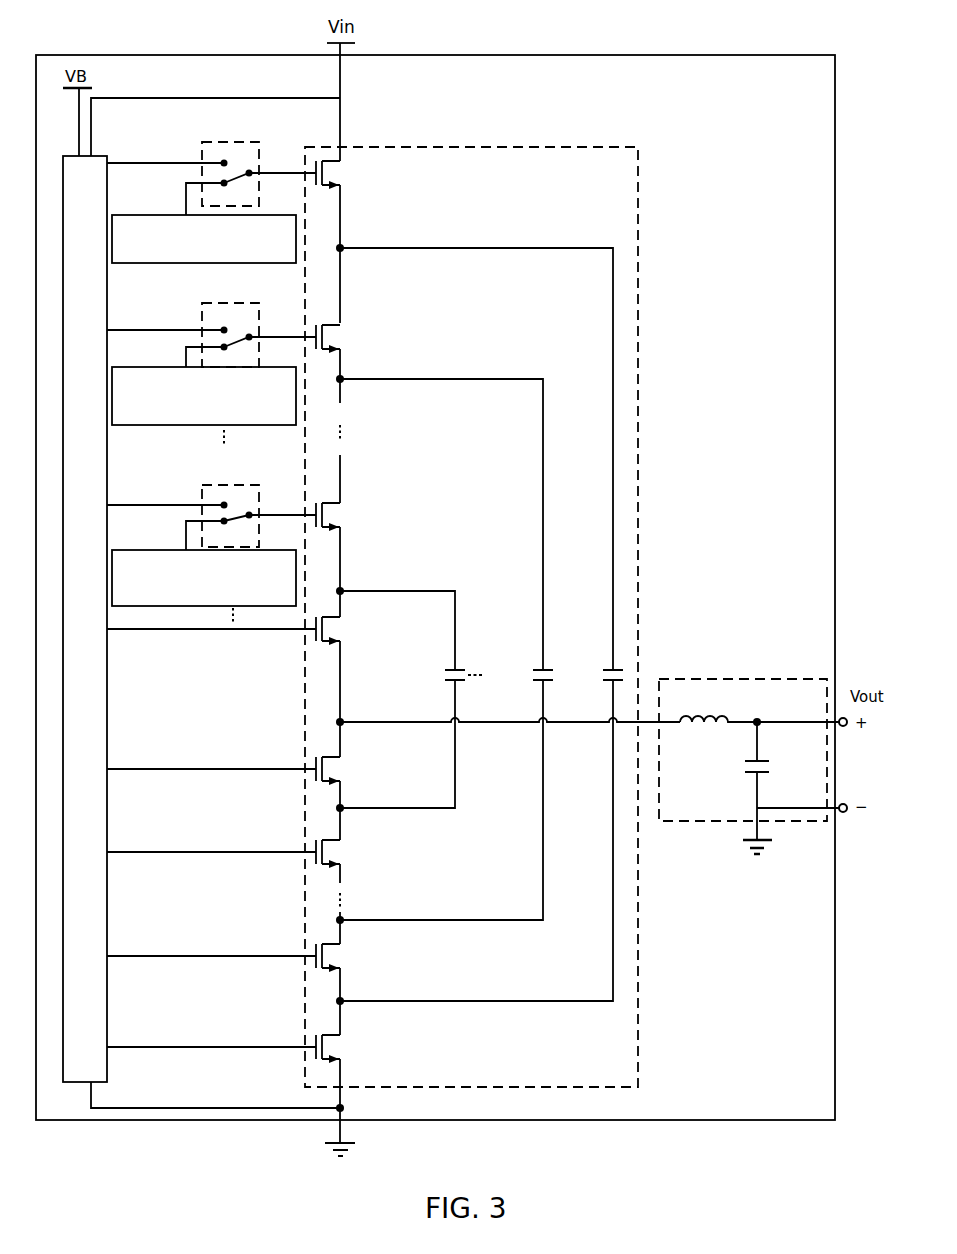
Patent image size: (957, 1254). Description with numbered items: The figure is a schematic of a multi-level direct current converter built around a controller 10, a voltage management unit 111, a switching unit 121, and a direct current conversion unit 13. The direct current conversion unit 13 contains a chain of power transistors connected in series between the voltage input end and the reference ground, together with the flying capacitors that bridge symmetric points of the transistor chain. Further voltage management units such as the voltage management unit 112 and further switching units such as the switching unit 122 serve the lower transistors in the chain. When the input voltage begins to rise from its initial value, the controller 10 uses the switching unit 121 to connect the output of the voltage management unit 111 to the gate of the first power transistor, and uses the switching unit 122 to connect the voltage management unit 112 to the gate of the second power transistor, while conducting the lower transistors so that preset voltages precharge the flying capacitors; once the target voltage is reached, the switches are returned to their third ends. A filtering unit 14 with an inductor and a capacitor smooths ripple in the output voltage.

The controller 10 is at (189, 619).
The voltage management unit 111 is at (204, 223).
The voltage management unit 112 is at (204, 386).
The switching unit 121 is at (243, 130).
The switching unit 122 is at (245, 292).
The direct current conversion unit 13 is at (418, 147).
The filtering unit 14 is at (659, 679).